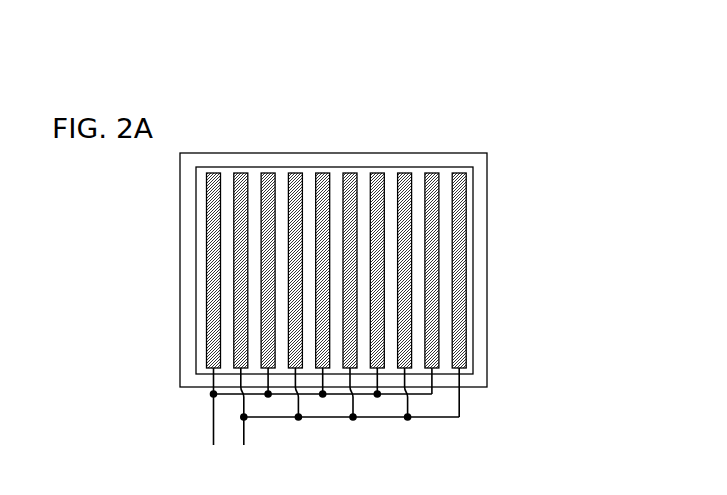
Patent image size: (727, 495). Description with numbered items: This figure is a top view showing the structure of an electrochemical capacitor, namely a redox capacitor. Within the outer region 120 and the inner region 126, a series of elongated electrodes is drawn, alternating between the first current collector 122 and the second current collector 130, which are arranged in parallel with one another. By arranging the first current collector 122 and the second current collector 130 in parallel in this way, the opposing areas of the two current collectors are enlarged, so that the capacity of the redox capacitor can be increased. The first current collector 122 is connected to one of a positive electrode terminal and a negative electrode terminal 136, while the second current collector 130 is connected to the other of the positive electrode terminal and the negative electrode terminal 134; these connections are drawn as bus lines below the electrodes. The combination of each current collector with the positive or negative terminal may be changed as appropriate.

The substrate 120 is at (480, 225).
The first current collector 122 is at (214, 195).
The electrode region 126 is at (473, 288).
The second current collector 130 is at (242, 195).
The positive electrode terminal or negative electrode terminal 134 is at (241, 435).
The positive electrode terminal or negative electrode terminal 136 is at (210, 432).